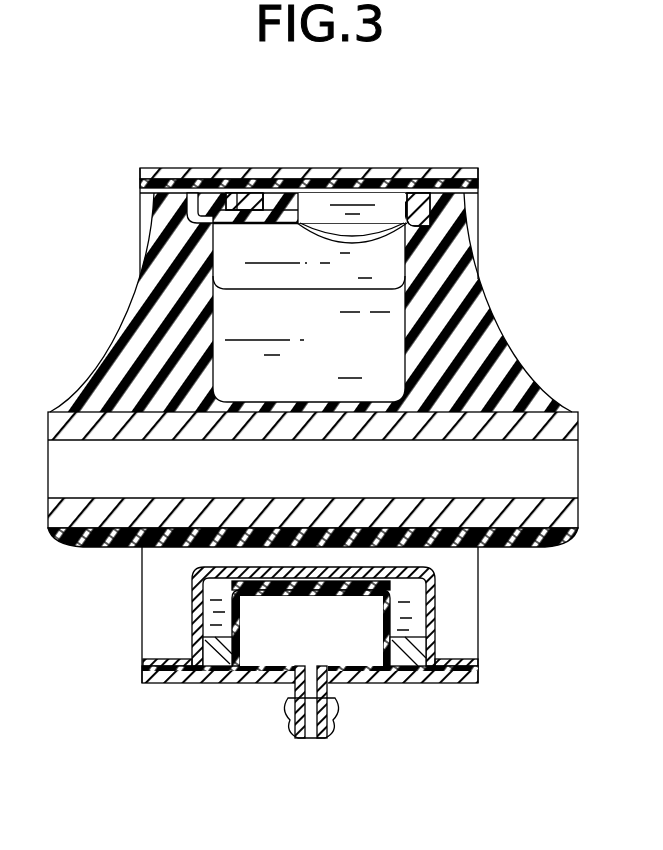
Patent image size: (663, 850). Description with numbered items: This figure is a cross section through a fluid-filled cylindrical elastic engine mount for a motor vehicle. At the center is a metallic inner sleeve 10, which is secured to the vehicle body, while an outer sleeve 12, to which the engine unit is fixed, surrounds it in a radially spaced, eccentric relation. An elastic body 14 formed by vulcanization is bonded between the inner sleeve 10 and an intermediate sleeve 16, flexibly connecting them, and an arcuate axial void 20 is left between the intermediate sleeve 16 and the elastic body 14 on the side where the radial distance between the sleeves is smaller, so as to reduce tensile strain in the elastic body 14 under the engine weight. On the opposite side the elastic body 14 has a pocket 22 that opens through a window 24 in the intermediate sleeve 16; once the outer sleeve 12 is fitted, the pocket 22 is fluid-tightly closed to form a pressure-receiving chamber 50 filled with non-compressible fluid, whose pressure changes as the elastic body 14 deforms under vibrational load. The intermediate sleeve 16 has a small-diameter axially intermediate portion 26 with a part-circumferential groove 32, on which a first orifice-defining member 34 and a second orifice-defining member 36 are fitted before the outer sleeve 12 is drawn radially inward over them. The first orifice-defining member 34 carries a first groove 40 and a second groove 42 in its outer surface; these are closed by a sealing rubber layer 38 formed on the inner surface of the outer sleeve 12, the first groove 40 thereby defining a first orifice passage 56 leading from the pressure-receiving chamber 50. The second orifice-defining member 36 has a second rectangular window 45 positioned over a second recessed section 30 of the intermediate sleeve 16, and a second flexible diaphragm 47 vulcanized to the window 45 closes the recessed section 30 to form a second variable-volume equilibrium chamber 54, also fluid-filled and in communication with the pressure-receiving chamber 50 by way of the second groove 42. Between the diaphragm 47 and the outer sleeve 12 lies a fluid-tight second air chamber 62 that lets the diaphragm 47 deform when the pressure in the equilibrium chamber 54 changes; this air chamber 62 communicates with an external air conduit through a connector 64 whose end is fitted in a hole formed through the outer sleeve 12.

The inner sleeve 10 is at (107, 425).
The outer sleeve 12 is at (176, 686).
The elastic body 14 is at (462, 287).
The intermediate sleeve 16 is at (155, 163).
The axial void 20 is at (222, 558).
The pocket 22 is at (218, 342).
The window 24 is at (250, 193).
The axially intermediate portion 26 is at (447, 253).
The second recessed section 30 is at (434, 607).
The part-circumferential groove 32 is at (204, 190).
The first orifice-defining member 34 is at (420, 190).
The second orifice-defining member 36 is at (419, 655).
The sealing rubber layer 38 is at (440, 190).
The first groove 40 is at (264, 192).
The second groove 42 is at (393, 195).
The second rectangular window 45 is at (248, 652).
The second flexible diaphragm 47 is at (232, 606).
The pressure-receiving chamber 50 is at (387, 342).
The second variable-volume equilibrium chamber 54 is at (415, 627).
The first orifice passage 56 is at (238, 193).
The second air chamber 62 is at (357, 645).
The connector 64 is at (297, 707).